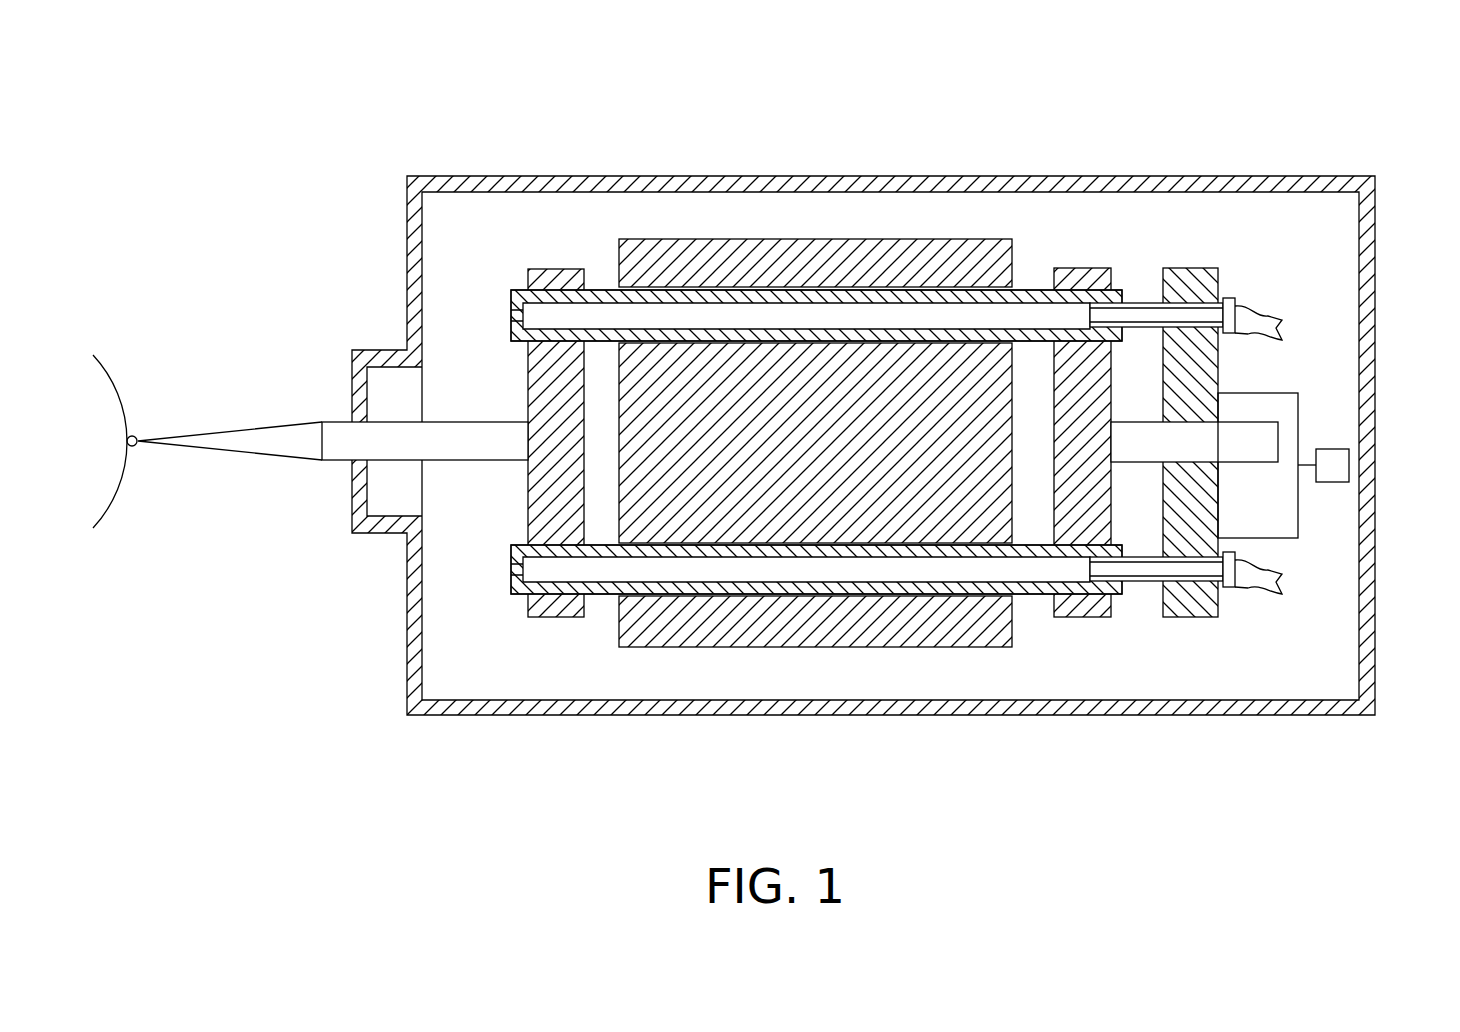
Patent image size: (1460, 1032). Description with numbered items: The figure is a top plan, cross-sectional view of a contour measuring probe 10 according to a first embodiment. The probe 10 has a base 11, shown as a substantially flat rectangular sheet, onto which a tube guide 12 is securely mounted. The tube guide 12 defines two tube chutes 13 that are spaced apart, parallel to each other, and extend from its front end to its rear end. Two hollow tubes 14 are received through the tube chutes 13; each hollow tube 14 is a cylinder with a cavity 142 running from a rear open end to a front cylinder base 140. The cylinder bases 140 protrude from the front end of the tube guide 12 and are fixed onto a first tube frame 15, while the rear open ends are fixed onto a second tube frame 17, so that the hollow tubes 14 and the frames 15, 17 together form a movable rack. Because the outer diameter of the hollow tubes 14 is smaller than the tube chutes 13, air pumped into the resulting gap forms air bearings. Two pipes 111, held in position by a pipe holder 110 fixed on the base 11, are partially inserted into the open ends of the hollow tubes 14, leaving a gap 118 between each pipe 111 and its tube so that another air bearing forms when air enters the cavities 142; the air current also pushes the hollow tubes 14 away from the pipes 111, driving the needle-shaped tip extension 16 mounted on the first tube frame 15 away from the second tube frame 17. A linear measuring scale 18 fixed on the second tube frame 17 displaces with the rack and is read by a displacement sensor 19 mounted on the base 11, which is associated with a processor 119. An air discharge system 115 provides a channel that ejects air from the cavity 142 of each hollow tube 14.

The contour measuring probe 10 is at (465, 113).
The base 11 is at (458, 218).
The tube guide 12 is at (883, 248).
The tube chutes 13 is at (783, 290).
The hollow tubes 14 is at (708, 437).
The cylinder base 140 is at (512, 563).
The cavity 142 is at (922, 568).
The first tube frame 15 is at (548, 378).
The tip extension 16 is at (410, 437).
The second tube frame 17 is at (1075, 275).
The linear measuring scale 18 is at (1253, 442).
The displacement sensor 19 is at (1272, 525).
The processor 119 is at (1338, 470).
The pipe holder 110 is at (1182, 285).
The pipes 111 is at (1220, 300).
The air discharge system 115 is at (503, 297).
The gap 118 is at (1117, 302).